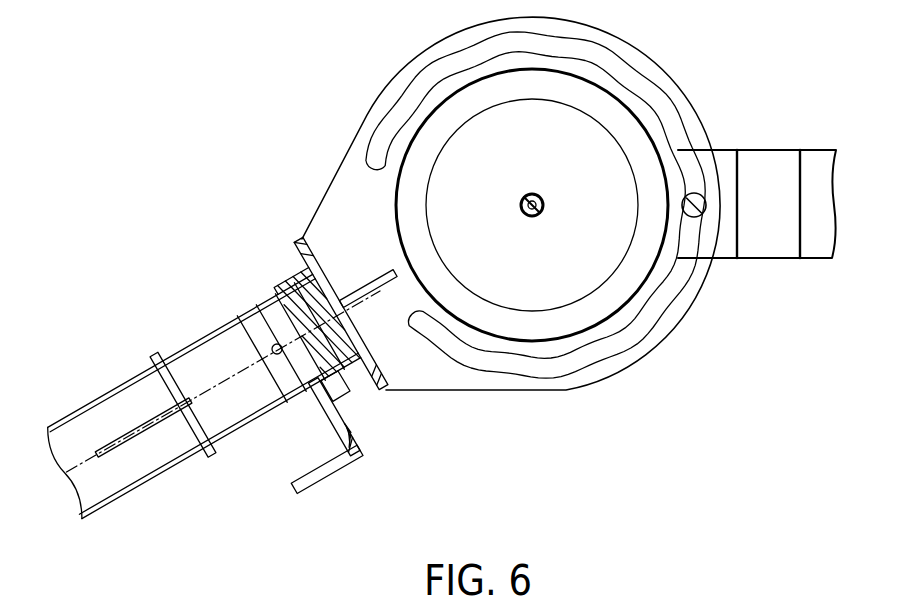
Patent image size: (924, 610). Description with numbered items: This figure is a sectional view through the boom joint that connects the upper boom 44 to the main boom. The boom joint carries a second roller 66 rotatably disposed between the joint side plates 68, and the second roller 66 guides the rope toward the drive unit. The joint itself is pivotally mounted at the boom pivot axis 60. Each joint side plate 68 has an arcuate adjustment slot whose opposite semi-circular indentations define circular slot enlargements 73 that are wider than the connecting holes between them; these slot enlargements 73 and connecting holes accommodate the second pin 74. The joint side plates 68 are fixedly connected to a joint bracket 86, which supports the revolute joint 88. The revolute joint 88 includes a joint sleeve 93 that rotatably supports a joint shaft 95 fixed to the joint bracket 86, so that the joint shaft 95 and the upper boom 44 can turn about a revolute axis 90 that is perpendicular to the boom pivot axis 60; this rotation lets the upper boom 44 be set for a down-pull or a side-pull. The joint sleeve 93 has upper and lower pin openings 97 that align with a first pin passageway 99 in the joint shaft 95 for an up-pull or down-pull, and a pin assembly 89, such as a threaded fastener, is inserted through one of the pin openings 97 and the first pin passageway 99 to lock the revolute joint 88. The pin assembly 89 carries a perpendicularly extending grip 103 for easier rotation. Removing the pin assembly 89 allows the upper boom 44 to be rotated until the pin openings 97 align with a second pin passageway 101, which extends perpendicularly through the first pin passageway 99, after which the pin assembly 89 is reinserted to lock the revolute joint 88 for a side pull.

The upper boom 44 is at (818, 162).
The boom pivot axis 60 is at (541, 194).
The second roller 66 is at (455, 105).
The joint side plates 68 is at (340, 200).
The slot enlargement 73 is at (592, 352).
The second pin 74 is at (697, 193).
The joint bracket 86 is at (365, 348).
The revolute joint 88 is at (245, 436).
The pin assembly 89 is at (357, 457).
The revolute axis 90 is at (203, 397).
The joint sleeve 93 is at (207, 340).
The joint shaft 95 is at (297, 277).
The pin openings 97 is at (268, 307).
The first pin passageway 99 is at (257, 357).
The second pin passageway 101 is at (290, 355).
The grip 103 is at (317, 480).